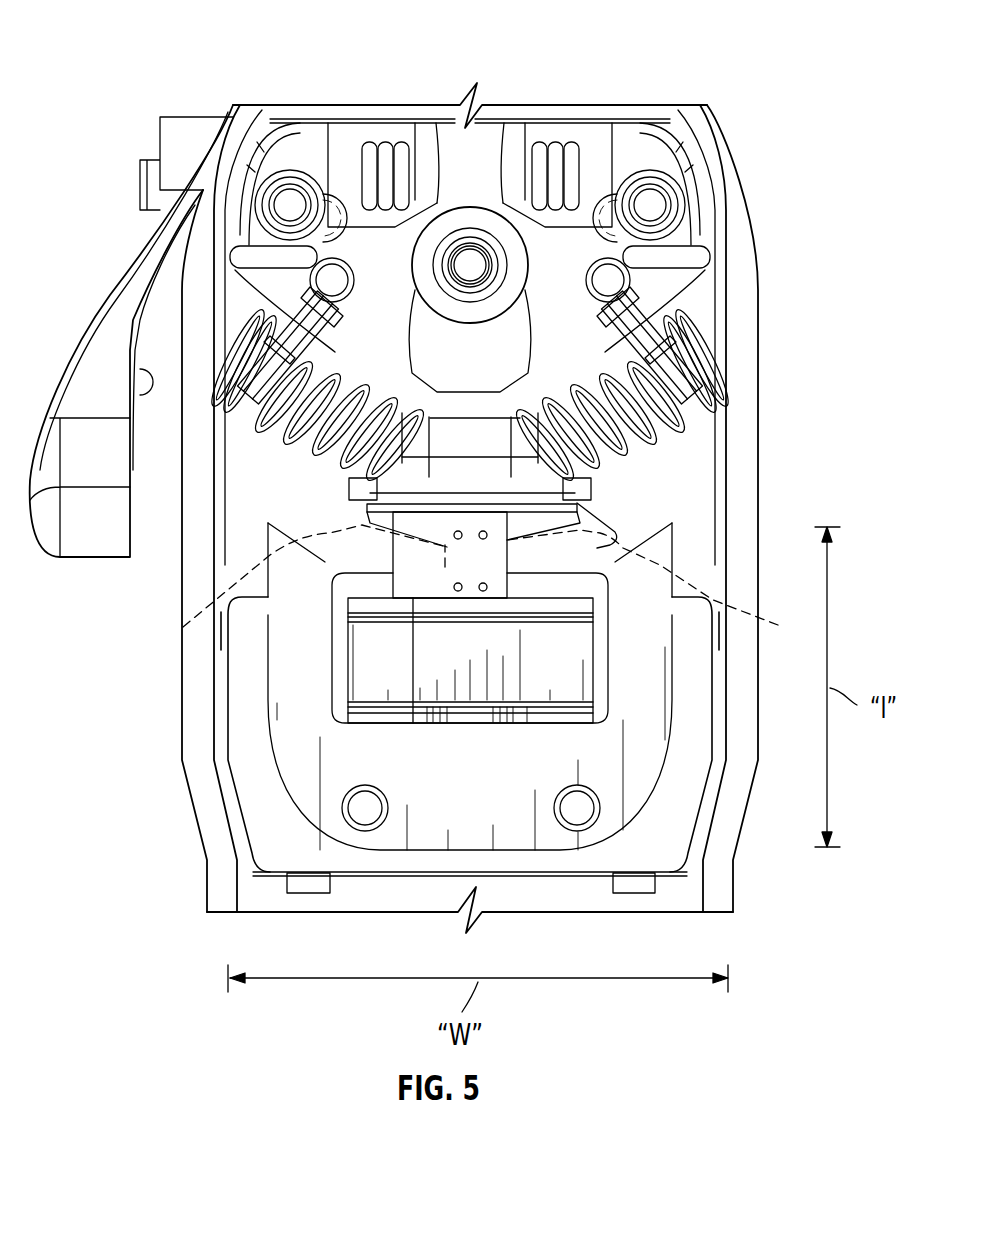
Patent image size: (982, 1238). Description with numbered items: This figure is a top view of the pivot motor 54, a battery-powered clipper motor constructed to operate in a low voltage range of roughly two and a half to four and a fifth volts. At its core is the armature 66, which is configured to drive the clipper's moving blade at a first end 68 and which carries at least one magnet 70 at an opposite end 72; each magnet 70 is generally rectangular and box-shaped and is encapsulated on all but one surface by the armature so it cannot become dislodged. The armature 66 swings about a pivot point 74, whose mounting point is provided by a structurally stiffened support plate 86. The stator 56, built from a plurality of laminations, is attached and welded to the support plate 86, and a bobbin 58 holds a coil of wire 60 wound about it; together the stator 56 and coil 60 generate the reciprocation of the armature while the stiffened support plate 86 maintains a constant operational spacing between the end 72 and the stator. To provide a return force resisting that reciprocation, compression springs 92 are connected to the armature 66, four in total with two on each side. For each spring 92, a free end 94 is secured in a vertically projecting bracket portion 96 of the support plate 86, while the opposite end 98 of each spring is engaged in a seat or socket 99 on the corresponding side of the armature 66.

The pivot motor 54 is at (122, 40).
The stator 56 is at (312, 752).
The bobbin 58 is at (355, 606).
The coil of wire 60 is at (468, 657).
The armature 66 is at (515, 275).
The first end 68 is at (465, 160).
The magnet 70 is at (183, 627).
The opposite end 72 is at (540, 540).
The pivot point 74 is at (477, 262).
The support plate 86 is at (386, 268).
The compression spring 92 is at (260, 428).
The free end 94 is at (705, 353).
The bracket portion 96 is at (677, 372).
The opposite end 98 is at (367, 482).
The seat 99 is at (533, 413).